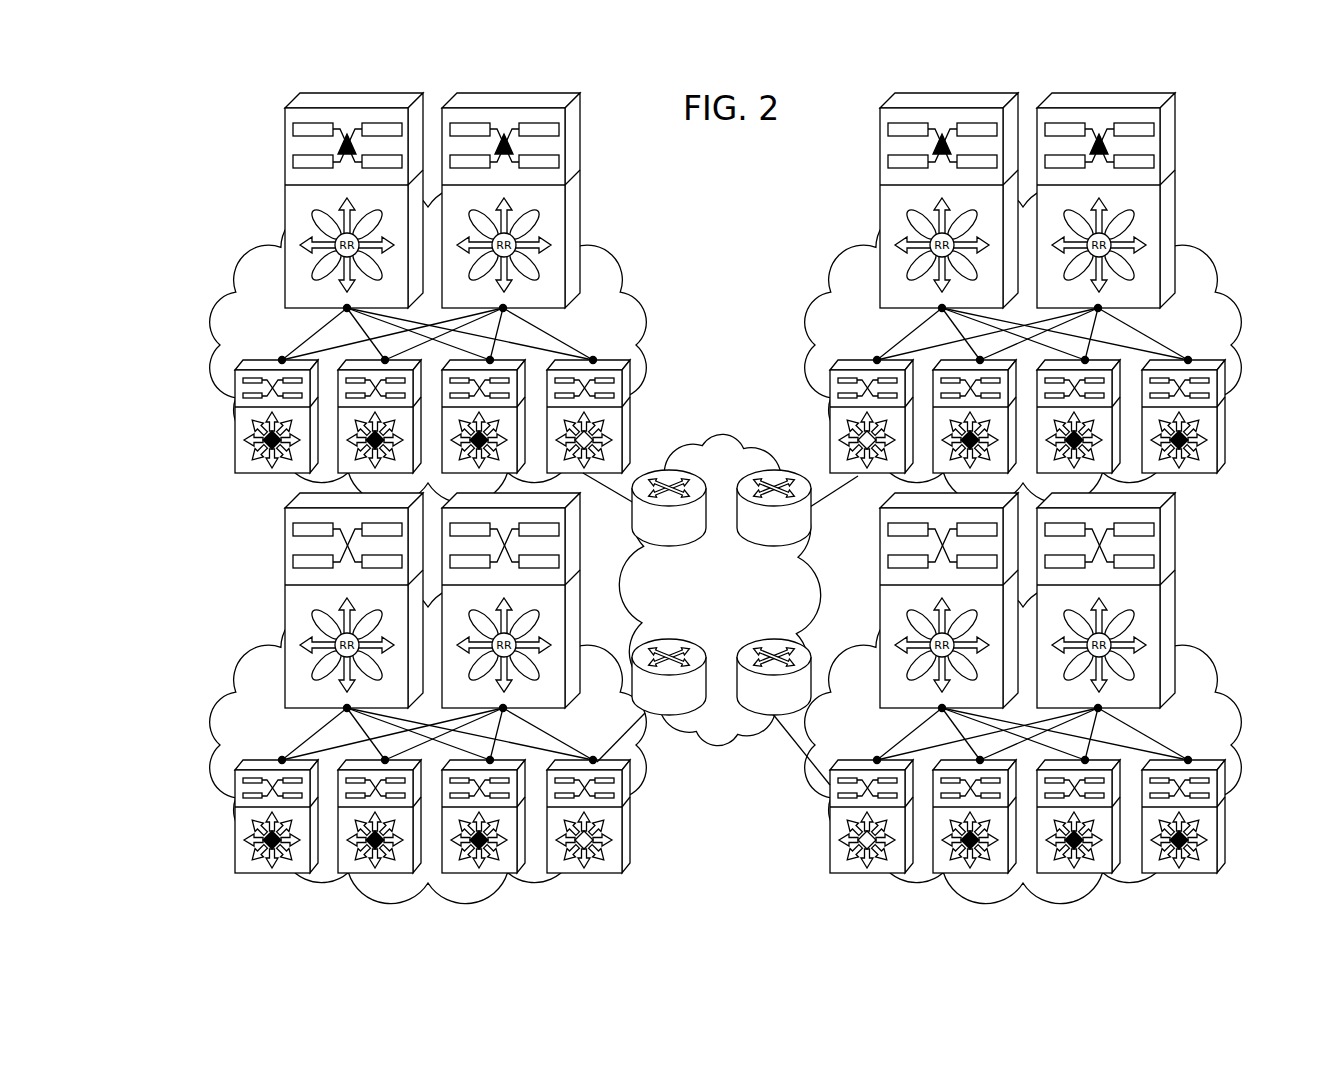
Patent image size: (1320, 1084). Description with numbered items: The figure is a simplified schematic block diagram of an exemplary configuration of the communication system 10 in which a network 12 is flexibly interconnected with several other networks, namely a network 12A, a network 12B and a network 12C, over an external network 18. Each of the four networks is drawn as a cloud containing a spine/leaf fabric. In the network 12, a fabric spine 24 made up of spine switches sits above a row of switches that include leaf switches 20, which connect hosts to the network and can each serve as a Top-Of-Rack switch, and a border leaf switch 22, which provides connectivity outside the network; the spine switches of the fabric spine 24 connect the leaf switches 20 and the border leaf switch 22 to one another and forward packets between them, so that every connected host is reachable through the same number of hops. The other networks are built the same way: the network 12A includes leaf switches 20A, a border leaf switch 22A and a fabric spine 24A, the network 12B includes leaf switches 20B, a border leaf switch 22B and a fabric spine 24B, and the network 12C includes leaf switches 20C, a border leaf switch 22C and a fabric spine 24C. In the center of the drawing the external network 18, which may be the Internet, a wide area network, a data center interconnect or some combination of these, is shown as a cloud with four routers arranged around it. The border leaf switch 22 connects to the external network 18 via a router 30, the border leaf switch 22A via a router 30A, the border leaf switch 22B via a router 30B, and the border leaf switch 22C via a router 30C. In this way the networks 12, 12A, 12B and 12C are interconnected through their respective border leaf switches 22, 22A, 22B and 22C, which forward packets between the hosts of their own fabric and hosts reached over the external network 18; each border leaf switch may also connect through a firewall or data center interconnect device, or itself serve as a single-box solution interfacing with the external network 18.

The communication system 10 is at (228, 143).
The network 12 is at (238, 255).
The network 12A is at (836, 255).
The network 12B is at (238, 686).
The network 12C is at (1228, 690).
The external network 18 is at (733, 605).
The leaf switches 20 is at (219, 422).
The leaf switches 20A is at (802, 441).
The leaf switches 20B is at (218, 832).
The leaf switches 20C is at (795, 847).
The border leaf switch 22 is at (630, 410).
The border leaf switch 22A is at (830, 410).
The border leaf switch 22B is at (628, 812).
The border leaf switch 22C is at (828, 808).
The fabric spine 24 is at (248, 202).
The fabric spine 24A is at (1215, 200).
The fabric spine 24B is at (246, 608).
The fabric spine 24C is at (1192, 607).
The router 30 is at (632, 523).
The router 30A is at (812, 528).
The router 30B is at (660, 718).
The router 30C is at (827, 633).